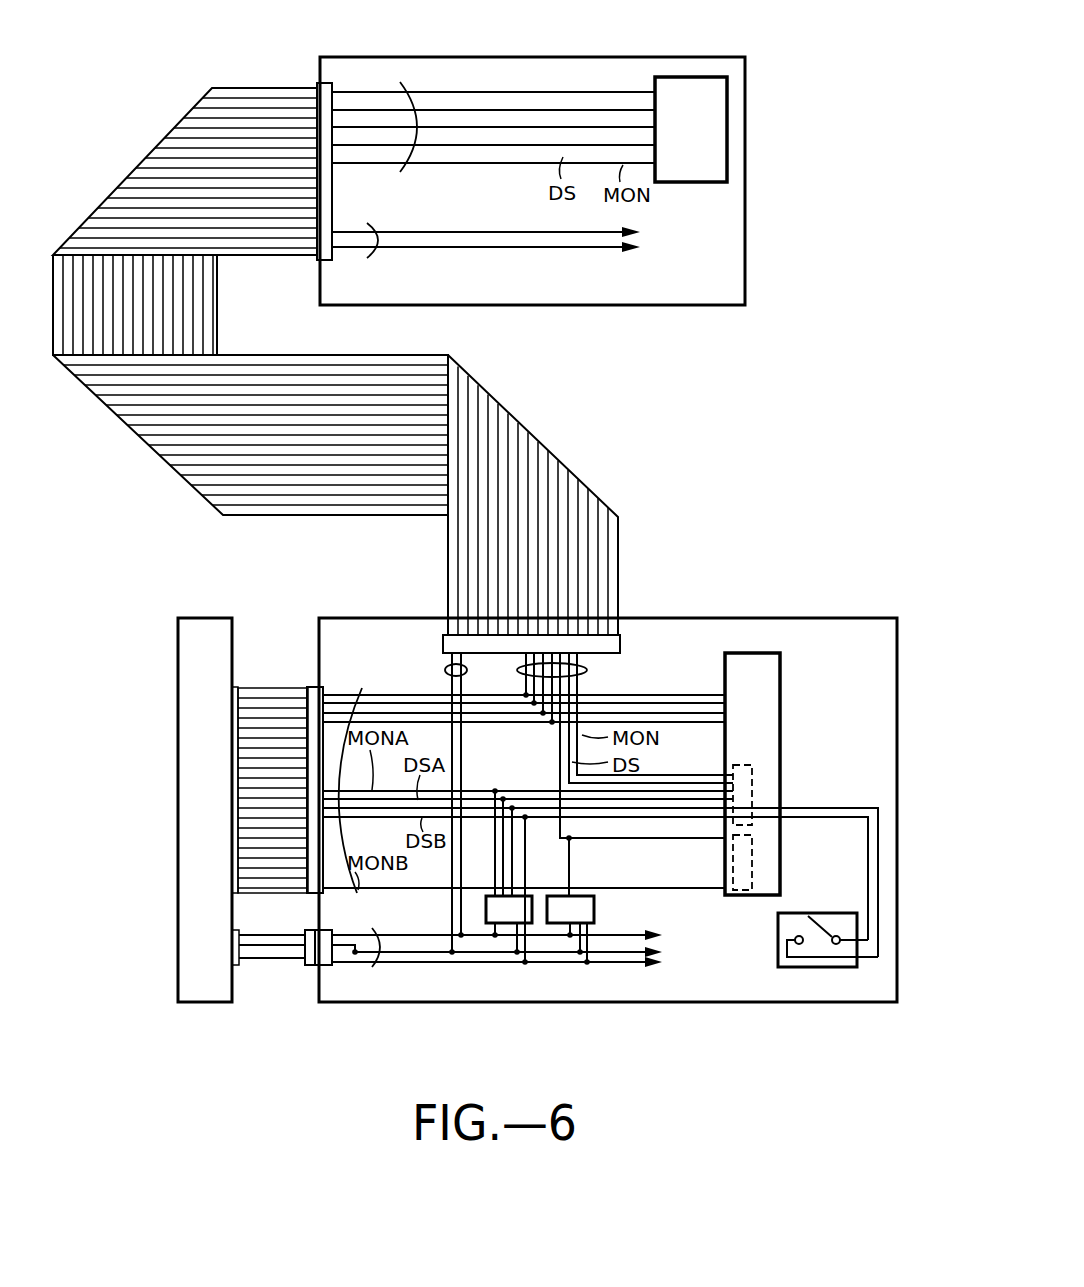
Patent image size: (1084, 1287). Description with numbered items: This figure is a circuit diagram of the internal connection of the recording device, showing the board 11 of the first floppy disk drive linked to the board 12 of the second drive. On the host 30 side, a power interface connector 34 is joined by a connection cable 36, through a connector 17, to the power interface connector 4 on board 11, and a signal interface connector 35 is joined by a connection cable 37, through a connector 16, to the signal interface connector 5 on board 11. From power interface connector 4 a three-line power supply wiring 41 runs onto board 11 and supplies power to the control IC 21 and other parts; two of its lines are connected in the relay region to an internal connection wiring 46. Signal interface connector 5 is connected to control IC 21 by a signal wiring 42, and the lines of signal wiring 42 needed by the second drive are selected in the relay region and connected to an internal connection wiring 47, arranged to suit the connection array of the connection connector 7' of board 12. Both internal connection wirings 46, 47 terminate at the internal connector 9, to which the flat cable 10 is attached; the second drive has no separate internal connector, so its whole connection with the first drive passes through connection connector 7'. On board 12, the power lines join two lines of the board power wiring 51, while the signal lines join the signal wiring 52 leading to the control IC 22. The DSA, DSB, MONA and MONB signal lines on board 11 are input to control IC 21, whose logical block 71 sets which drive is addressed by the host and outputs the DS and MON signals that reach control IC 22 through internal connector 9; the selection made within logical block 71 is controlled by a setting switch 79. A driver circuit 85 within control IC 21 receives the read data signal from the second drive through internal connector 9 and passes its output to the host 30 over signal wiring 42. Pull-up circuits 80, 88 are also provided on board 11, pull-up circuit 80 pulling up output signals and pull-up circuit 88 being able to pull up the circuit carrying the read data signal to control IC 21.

The connection connector 7' is at (315, 143).
The board of FDD 2 12 is at (610, 68).
The control IC of board 12 22 is at (718, 148).
The signal wiring 52 is at (400, 172).
The board power wiring 51 is at (367, 258).
The flat cable 10 is at (575, 492).
The internal connector 9 is at (612, 643).
The internal connection wiring for power supply 46 is at (445, 670).
The internal connection wiring for signals 47 is at (587, 672).
The host 30 is at (209, 628).
The control IC 21 is at (750, 662).
The signal interface connector of the host 35 is at (238, 687).
The connection cable 37 is at (283, 703).
The signal interface connector 5 is at (313, 687).
The logical block 71 is at (743, 758).
The driver circuit 85 is at (748, 863).
The connector 16 is at (308, 895).
The signal wiring 42 is at (360, 895).
The pull-up circuit 80 is at (489, 910).
The pull-up circuit 88 is at (592, 910).
The connection cable 36 is at (268, 950).
The power interface connector of the host 34 is at (238, 965).
The connector 17 is at (308, 967).
The power interface connector 4 is at (323, 957).
The power supply wiring 41 is at (377, 967).
The board of FDD 1 11 is at (628, 982).
The setting switch 79 is at (811, 968).